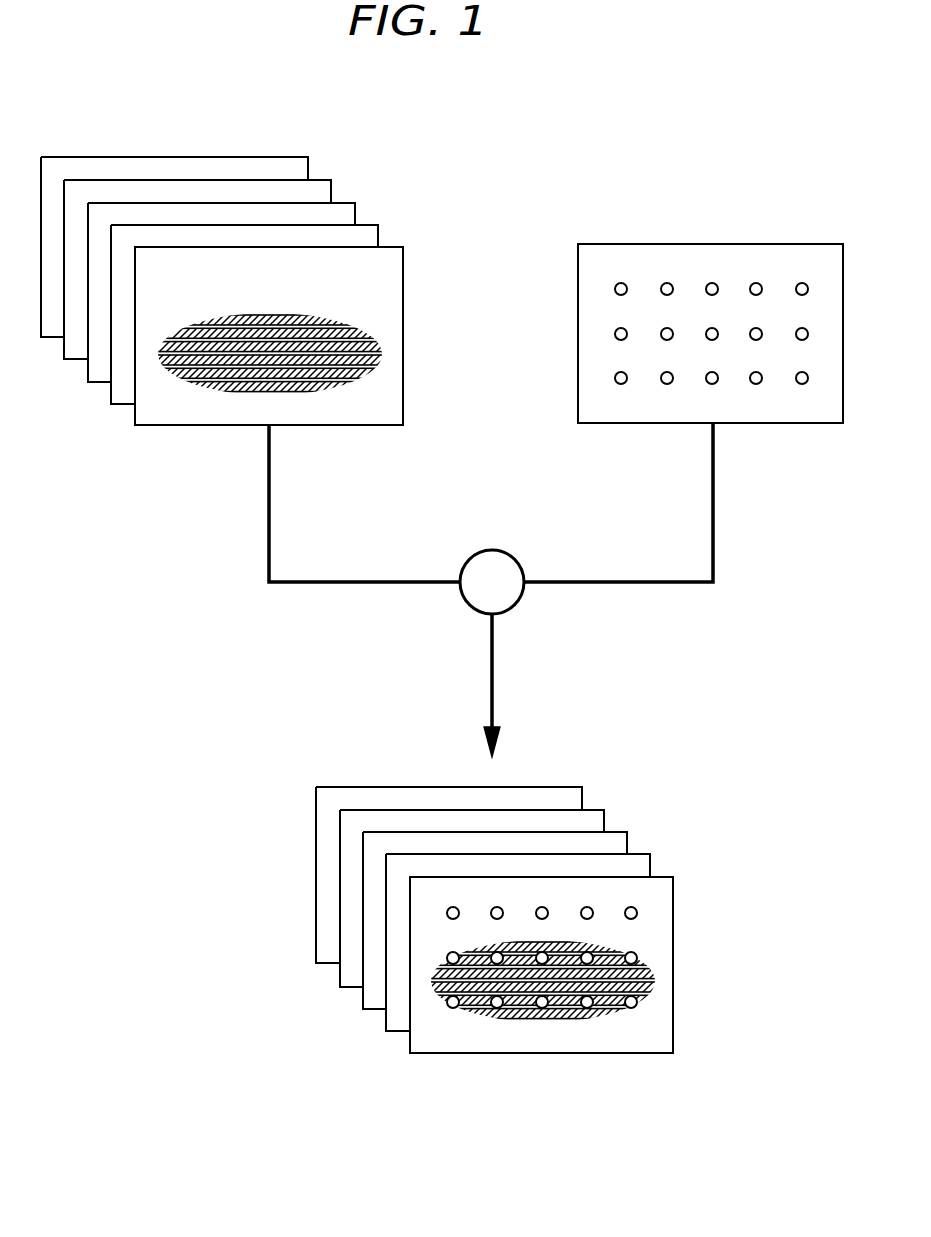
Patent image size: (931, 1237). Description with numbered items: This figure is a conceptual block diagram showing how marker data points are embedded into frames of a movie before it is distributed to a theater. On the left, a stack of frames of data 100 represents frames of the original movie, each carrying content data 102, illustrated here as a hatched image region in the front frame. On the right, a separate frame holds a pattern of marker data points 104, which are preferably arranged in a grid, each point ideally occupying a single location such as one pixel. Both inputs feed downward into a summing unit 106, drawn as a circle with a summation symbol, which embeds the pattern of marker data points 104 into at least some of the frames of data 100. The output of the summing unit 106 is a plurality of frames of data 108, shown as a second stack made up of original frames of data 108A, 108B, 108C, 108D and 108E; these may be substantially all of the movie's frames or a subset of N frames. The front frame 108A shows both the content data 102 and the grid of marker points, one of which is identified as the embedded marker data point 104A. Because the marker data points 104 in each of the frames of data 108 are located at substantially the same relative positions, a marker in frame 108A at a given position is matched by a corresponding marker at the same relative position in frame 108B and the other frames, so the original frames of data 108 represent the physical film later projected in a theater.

The frames of data 100 is at (67, 157).
The content data 102 is at (378, 290).
The marker data points 104 is at (608, 264).
The embedded marker data point 104A is at (638, 913).
The summing unit 106 is at (483, 549).
The frames of data 108 is at (343, 787).
The original frame of data 108A is at (674, 878).
The original frame of data 108B is at (651, 855).
The original frame of data 108C is at (628, 833).
The original frame of data 108D is at (604, 811).
The original frame of data 108E is at (583, 790).